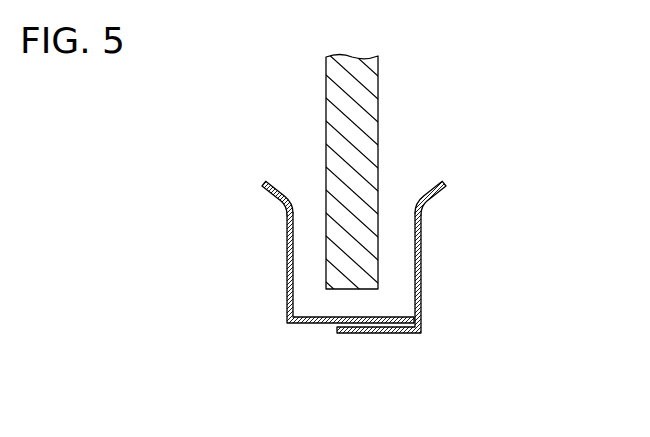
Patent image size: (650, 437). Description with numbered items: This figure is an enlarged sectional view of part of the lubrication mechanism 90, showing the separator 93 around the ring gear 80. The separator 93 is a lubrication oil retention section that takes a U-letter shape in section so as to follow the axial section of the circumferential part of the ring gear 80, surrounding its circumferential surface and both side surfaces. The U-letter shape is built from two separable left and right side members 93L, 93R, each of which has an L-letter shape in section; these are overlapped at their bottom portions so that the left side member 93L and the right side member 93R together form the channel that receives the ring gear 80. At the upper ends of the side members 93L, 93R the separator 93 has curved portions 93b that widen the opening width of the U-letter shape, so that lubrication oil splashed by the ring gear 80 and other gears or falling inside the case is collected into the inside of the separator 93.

The ring gear 80 is at (378, 100).
The lubrication mechanism 90 is at (490, 125).
The separator 93 is at (355, 300).
The left side member 93L is at (287, 283).
The right side member 93R is at (421, 283).
The curved portions 93b is at (276, 198).